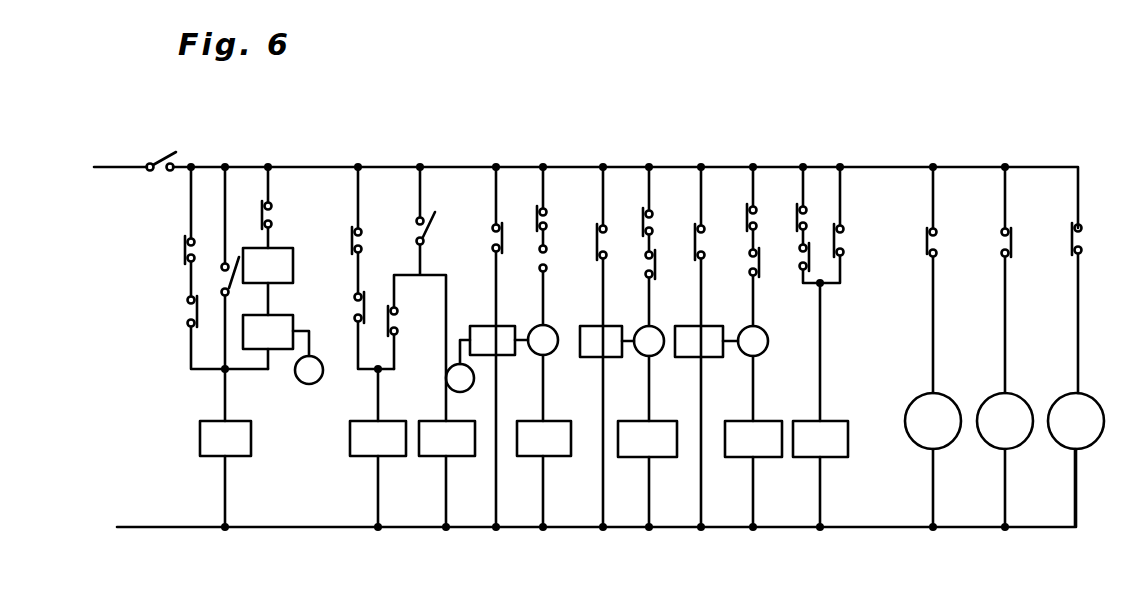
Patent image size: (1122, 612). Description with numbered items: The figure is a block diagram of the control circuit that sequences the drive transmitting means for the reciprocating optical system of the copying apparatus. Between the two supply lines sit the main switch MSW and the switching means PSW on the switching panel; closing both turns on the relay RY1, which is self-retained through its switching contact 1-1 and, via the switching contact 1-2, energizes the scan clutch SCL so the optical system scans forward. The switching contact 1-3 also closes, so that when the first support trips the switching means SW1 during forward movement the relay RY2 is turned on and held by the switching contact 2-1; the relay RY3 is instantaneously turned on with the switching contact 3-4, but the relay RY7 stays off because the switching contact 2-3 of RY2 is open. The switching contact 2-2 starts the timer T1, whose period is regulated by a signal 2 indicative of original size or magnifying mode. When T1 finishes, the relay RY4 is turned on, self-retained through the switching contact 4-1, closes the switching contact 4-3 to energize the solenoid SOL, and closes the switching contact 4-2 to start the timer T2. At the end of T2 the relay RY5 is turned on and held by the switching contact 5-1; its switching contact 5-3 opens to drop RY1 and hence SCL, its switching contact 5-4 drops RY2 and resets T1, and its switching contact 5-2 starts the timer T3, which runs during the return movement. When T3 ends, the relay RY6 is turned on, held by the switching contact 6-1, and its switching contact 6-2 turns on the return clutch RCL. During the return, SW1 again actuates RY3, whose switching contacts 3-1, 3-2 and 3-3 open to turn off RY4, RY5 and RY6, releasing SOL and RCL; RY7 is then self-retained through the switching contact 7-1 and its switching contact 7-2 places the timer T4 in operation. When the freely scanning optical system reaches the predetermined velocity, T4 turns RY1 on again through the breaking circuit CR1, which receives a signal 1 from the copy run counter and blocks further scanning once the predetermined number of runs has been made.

The main switch MSW is at (156, 160).
The switching means PSW is at (224, 292).
The switching means SW1 is at (440, 218).
The switching contact 1-1 is at (167, 250).
The switching contact 1-2 is at (926, 240).
The switching contact 1-3 is at (414, 322).
The switching contact 2-1 is at (380, 241).
The switching contact 2-2 is at (471, 239).
The switching contact 2-3 is at (799, 264).
The switching contact 3-1 is at (551, 265).
The switching contact 3-2 is at (659, 264).
The switching contact 3-3 is at (747, 255).
The switching contact 3-4 is at (861, 240).
The switching contact 4-1 is at (551, 216).
The switching contact 4-2 is at (579, 243).
The switching contact 4-3 is at (1051, 239).
The switching contact 5-1 is at (655, 222).
The switching contact 5-2 is at (720, 242).
The switching contact 5-3 is at (166, 311).
The switching contact 5-4 is at (333, 307).
The switching contact 6-1 is at (745, 216).
The switching contact 6-2 is at (980, 242).
The switching contact 7-1 is at (796, 216).
The switching contact 7-2 is at (291, 216).
The timer T1 is at (499, 340).
The timer T2 is at (607, 341).
The timer T3 is at (706, 341).
The timer T4 is at (268, 265).
The breaking circuit CR1 is at (268, 332).
The relay RY1 is at (225, 438).
The relay RY2 is at (378, 438).
The relay RY3 is at (447, 438).
The relay RY4 is at (544, 438).
The relay RY5 is at (647, 439).
The relay RY6 is at (753, 439).
The relay RY7 is at (820, 439).
The scan clutch SCL is at (933, 421).
The return clutch RCL is at (1005, 421).
The solenoid SOL is at (1076, 421).
The signal 1 is at (308, 357).
The signal 2 is at (460, 366).